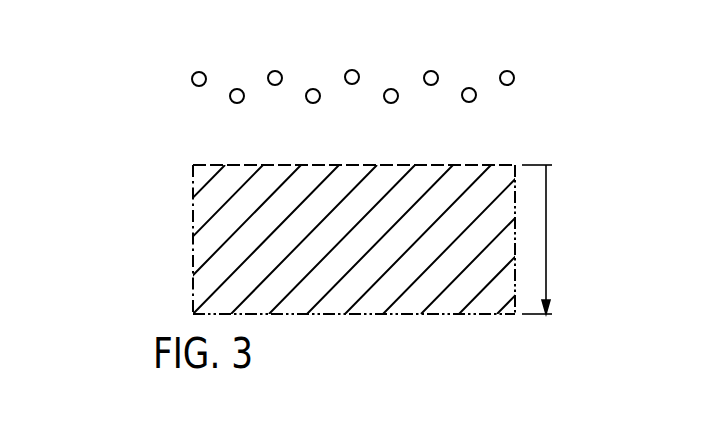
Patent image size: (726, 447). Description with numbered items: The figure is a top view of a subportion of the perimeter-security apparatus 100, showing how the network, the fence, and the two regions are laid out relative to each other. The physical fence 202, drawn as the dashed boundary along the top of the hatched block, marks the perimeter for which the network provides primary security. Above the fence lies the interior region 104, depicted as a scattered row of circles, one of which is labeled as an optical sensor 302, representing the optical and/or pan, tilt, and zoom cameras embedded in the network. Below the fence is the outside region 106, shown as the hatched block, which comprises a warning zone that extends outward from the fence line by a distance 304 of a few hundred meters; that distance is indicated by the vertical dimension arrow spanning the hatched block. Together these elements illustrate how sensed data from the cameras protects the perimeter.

The apparatus 100 is at (230, 51).
The interior region 104 is at (361, 89).
The outside region 106 is at (342, 217).
The physical fence 202 is at (436, 163).
The optical sensors 302 is at (513, 73).
The distance 304 is at (546, 223).